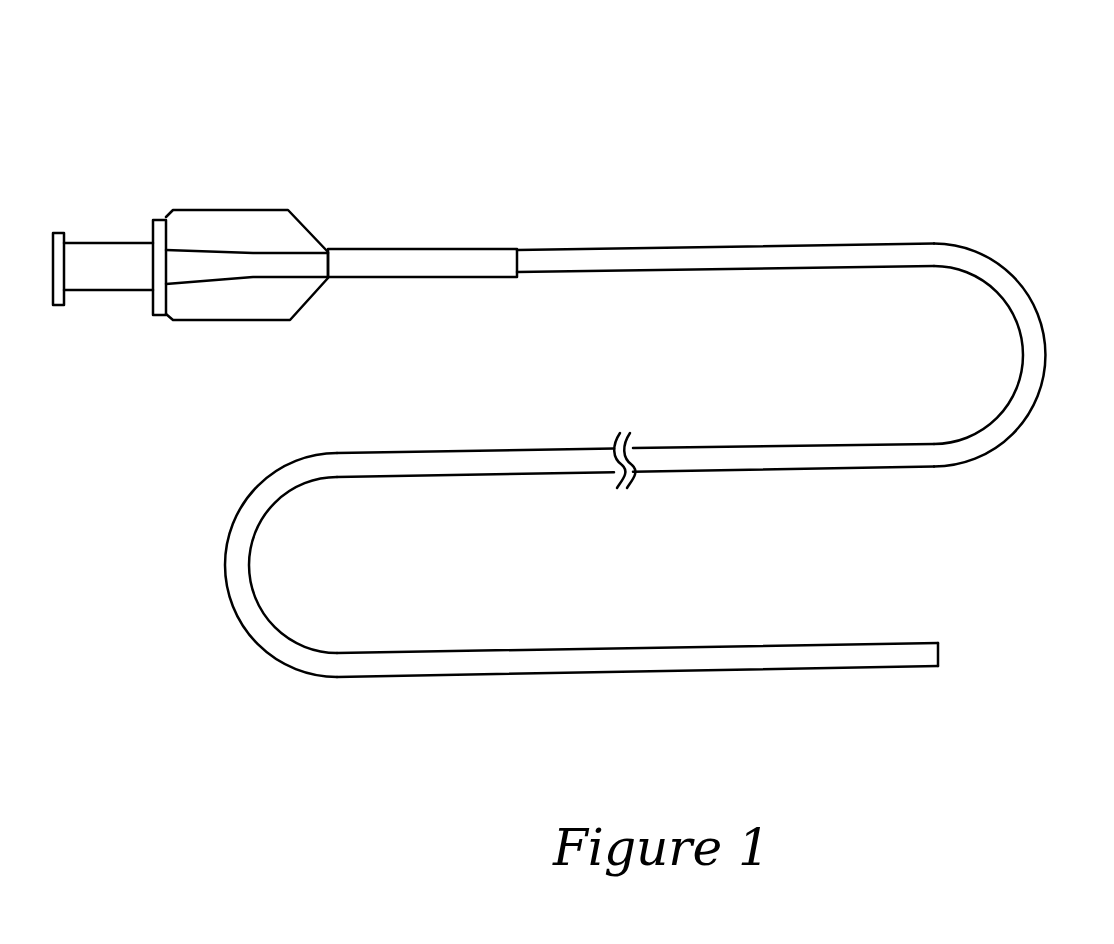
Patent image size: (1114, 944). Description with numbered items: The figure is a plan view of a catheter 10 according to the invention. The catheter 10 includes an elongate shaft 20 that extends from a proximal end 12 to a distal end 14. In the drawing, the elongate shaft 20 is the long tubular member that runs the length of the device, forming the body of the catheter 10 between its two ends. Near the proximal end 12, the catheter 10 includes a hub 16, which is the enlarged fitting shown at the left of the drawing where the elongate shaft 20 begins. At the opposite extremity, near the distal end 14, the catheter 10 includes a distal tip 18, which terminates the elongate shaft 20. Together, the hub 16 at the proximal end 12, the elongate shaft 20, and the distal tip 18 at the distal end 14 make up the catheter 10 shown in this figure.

The catheter 10 is at (583, 346).
The proximal end 12 is at (285, 201).
The distal end 14 is at (669, 452).
The hub 16 is at (217, 223).
The distal tip 18 is at (925, 642).
The elongate shaft 20 is at (1018, 280).